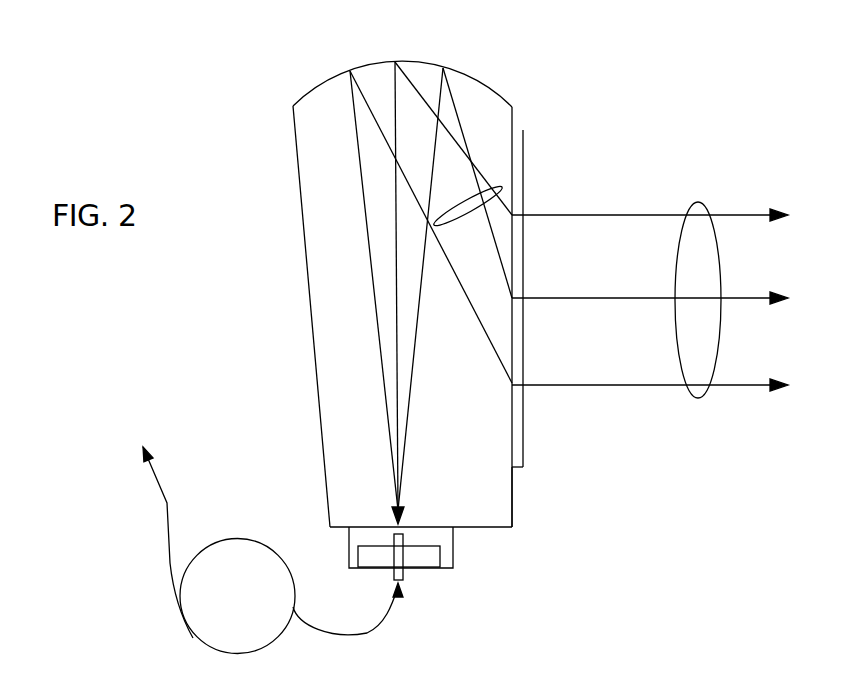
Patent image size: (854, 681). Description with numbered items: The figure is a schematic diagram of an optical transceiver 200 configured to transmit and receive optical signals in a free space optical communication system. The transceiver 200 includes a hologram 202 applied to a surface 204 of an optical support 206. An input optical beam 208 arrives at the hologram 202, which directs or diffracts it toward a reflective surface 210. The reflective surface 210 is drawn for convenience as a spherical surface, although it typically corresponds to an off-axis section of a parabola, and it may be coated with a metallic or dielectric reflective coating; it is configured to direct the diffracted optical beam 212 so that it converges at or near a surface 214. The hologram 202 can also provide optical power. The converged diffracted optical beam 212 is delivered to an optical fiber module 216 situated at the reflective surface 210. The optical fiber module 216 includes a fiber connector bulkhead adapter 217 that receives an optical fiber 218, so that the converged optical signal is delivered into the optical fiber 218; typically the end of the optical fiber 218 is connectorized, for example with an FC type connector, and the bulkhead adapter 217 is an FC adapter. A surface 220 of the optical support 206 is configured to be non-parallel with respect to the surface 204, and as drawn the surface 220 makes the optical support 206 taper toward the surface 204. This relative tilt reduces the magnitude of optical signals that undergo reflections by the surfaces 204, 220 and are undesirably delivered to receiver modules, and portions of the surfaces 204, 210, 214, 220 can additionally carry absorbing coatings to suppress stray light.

The optical transceiver 200 is at (232, 124).
The hologram 202 is at (512, 131).
The surface 204 is at (517, 502).
The optical support 206 is at (478, 493).
The input optical beam 208 is at (698, 212).
The reflective surface 210 is at (480, 79).
The diffracted optical beam 212 is at (501, 191).
The surface 214 is at (465, 530).
The optical fiber module 216 is at (453, 560).
The fiber connector bulkhead adapter 217 is at (419, 570).
The optical fiber 218 is at (167, 503).
The surface 220 is at (308, 293).